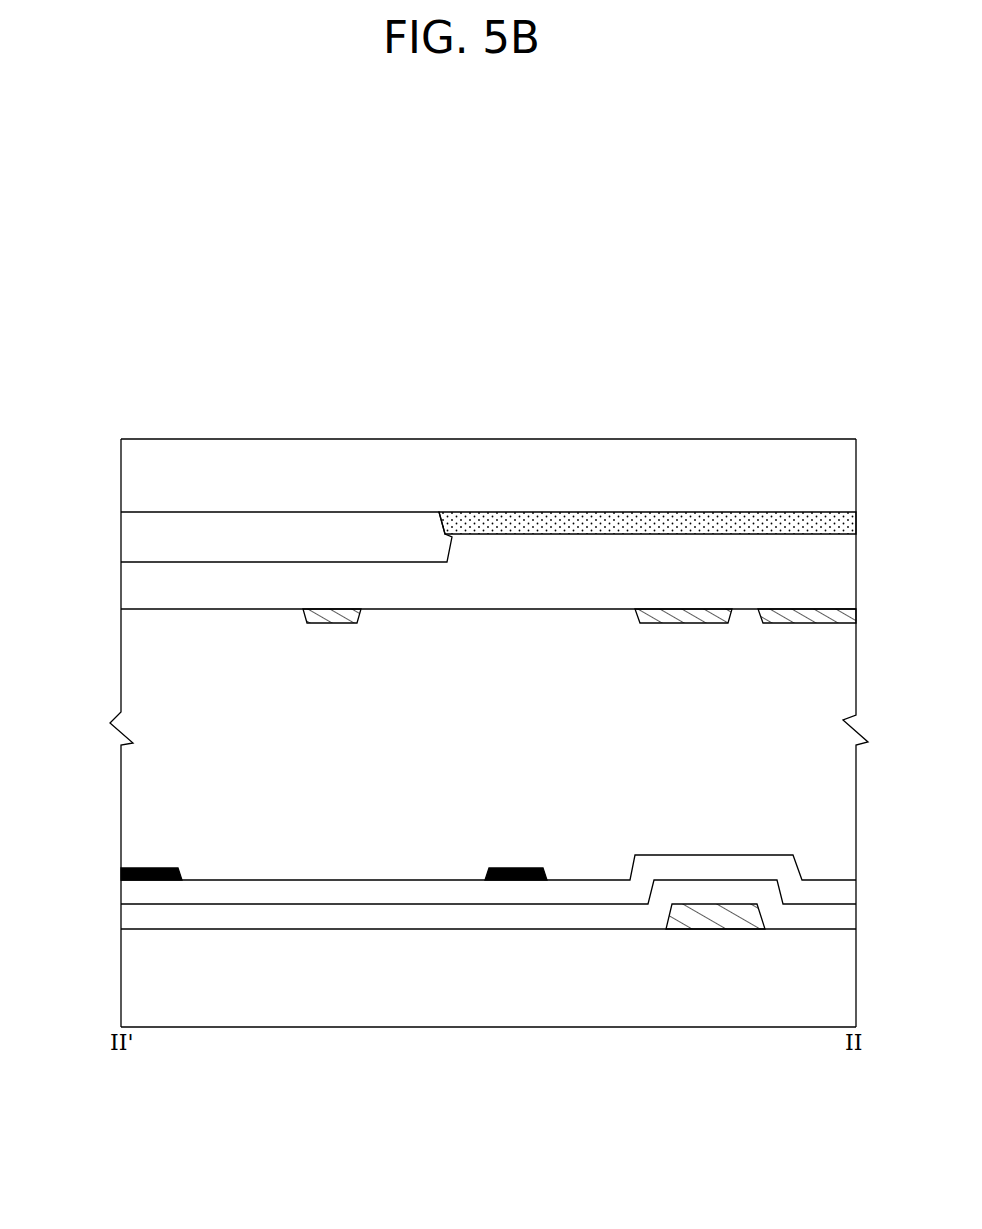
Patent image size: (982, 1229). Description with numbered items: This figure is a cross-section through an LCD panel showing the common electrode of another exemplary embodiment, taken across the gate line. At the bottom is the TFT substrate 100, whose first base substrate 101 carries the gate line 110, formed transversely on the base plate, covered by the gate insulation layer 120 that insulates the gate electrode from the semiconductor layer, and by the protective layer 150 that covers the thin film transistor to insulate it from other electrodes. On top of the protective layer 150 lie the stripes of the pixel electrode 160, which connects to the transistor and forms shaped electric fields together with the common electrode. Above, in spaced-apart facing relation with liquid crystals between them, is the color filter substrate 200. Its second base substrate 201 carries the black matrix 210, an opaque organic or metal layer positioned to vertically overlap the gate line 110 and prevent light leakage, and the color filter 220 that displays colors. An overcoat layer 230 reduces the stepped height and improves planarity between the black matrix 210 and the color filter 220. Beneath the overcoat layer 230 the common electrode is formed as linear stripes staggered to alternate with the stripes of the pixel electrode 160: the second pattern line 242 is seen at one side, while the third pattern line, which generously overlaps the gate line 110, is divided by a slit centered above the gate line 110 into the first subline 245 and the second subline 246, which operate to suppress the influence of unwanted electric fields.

The TFT substrate 100 is at (98, 951).
The first base substrate 101 is at (347, 1010).
The gate line 110 is at (715, 925).
The gate insulation layer 120 is at (593, 925).
The protective layer 150 is at (470, 900).
The pixel electrode 160 is at (146, 868).
The color filter substrate 200 is at (98, 533).
The second base substrate 201 is at (389, 452).
The black matrix 210 is at (585, 523).
The color filter 220 is at (215, 525).
The overcoat layer 230 is at (757, 548).
The second pattern line 242 is at (330, 625).
The first subline 245 is at (685, 625).
The second subline 246 is at (806, 625).